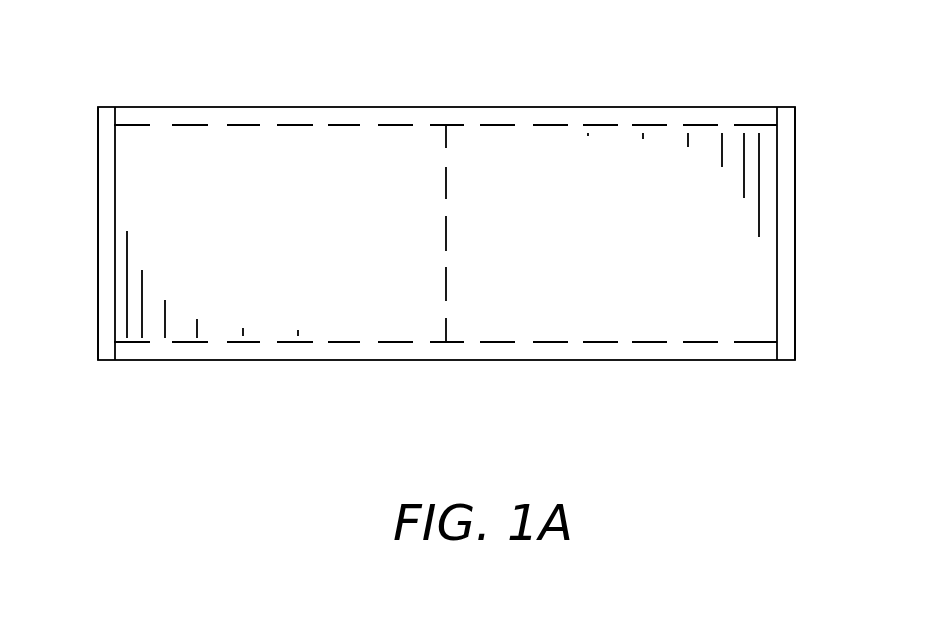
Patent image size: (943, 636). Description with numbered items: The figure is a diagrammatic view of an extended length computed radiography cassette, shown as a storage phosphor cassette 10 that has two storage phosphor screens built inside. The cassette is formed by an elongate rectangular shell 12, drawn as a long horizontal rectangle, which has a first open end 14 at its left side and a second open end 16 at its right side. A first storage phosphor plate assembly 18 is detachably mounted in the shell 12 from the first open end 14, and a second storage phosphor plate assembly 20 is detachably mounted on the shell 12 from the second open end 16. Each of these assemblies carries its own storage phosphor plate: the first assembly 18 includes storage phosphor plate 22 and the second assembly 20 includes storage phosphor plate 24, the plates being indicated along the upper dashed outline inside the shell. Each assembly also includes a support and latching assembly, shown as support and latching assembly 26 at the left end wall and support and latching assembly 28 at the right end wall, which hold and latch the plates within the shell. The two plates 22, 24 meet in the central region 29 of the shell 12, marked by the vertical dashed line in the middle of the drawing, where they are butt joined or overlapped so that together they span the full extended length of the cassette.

The storage phosphor cassette 10 is at (432, 64).
The elongate rectangular shell 12 is at (263, 362).
The first open end 14 is at (116, 222).
The second open end 16 is at (776, 322).
The first storage phosphor plate assembly 18 is at (80, 307).
The second storage phosphor plate assembly 20 is at (804, 307).
The storage phosphor plate 22 is at (260, 127).
The storage phosphor plate 24 is at (540, 127).
The support and latching assembly 26 is at (97, 152).
The support and latching assembly 28 is at (796, 146).
The central region 29 is at (412, 386).